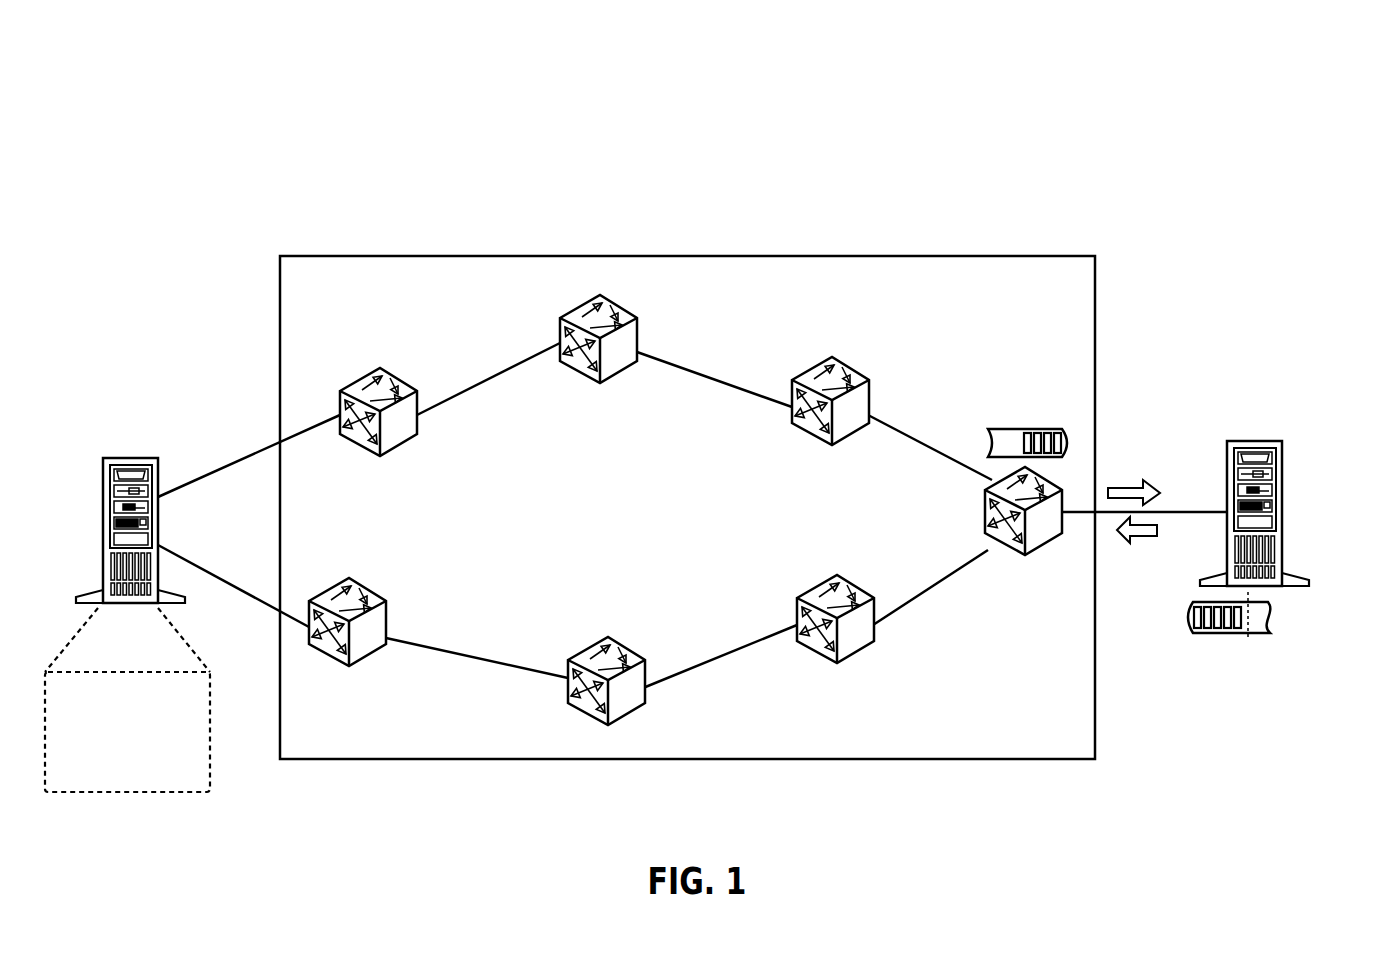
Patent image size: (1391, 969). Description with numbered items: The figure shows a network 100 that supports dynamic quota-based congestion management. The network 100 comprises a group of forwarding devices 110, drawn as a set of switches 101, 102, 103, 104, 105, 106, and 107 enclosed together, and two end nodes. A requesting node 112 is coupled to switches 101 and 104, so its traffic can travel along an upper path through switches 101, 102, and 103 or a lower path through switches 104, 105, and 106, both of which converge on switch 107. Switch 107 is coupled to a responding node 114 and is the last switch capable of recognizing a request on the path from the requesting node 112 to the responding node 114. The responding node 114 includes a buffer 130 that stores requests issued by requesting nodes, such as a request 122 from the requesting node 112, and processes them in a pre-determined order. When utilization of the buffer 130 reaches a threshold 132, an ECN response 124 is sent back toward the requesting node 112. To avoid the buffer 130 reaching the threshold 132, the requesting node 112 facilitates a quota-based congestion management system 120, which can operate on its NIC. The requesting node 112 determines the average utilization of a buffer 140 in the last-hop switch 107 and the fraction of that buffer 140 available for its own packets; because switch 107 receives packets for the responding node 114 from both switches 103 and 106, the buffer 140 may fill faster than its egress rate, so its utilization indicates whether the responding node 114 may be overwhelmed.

The network 100 is at (196, 121).
The forwarding devices 110 is at (687, 256).
The switch 101 is at (340, 400).
The switch 102 is at (637, 338).
The switch 103 is at (868, 400).
The switch 104 is at (363, 658).
The switch 105 is at (630, 717).
The switch 106 is at (797, 653).
The switch 107 is at (1045, 542).
The requesting node 112 is at (130, 458).
The responding node 114 is at (1252, 441).
The congestion management system 120 is at (113, 779).
The request 122 is at (1125, 486).
The ECN response 124 is at (1130, 543).
The buffer 130 is at (1230, 633).
The threshold 132 is at (1248, 640).
The buffer 140 is at (1027, 429).